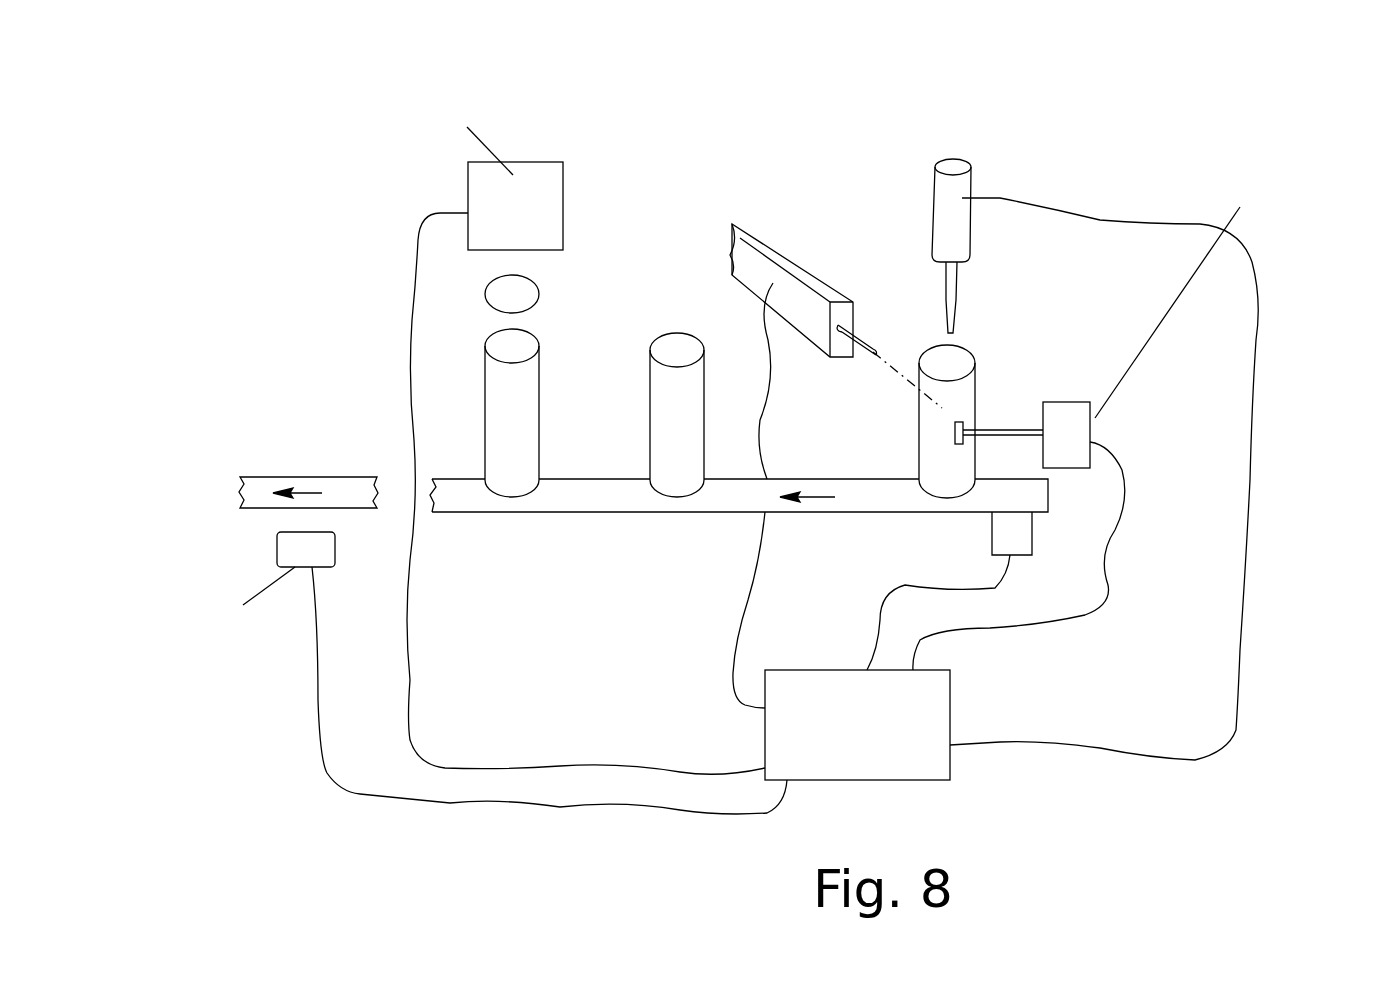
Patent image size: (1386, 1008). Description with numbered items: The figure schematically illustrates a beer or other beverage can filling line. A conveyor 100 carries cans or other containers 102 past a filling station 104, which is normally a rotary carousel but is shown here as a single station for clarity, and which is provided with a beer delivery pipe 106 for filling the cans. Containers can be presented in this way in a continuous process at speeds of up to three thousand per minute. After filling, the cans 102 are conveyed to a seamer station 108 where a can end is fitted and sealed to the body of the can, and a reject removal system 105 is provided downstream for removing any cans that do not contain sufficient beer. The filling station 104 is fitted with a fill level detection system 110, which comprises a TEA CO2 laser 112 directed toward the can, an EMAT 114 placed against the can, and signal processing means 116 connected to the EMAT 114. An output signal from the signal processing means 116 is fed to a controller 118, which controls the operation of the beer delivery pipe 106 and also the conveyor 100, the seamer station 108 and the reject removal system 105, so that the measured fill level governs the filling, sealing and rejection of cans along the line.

The conveyor 100 is at (572, 500).
The cans 102 is at (510, 465).
The filling station 104 is at (997, 343).
The reject removal system 105 is at (326, 561).
The beer delivery pipe 106 is at (945, 223).
The seamer station 108 is at (555, 325).
The fill level detection system 110 is at (997, 413).
The TEA CO2 laser 112 is at (768, 245).
The EMAT 114 is at (950, 428).
The signal processing means 116 is at (1083, 444).
The controller 118 is at (913, 765).